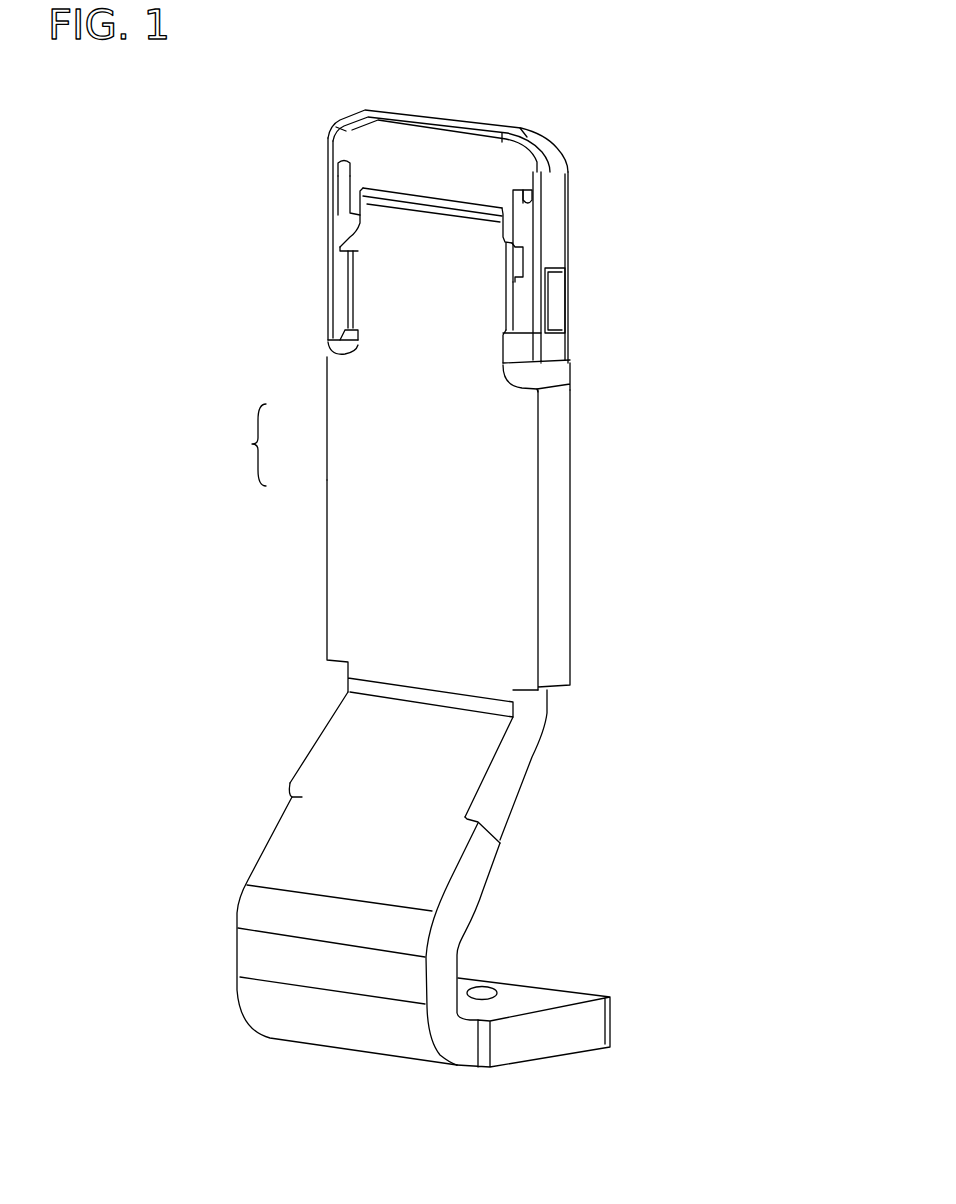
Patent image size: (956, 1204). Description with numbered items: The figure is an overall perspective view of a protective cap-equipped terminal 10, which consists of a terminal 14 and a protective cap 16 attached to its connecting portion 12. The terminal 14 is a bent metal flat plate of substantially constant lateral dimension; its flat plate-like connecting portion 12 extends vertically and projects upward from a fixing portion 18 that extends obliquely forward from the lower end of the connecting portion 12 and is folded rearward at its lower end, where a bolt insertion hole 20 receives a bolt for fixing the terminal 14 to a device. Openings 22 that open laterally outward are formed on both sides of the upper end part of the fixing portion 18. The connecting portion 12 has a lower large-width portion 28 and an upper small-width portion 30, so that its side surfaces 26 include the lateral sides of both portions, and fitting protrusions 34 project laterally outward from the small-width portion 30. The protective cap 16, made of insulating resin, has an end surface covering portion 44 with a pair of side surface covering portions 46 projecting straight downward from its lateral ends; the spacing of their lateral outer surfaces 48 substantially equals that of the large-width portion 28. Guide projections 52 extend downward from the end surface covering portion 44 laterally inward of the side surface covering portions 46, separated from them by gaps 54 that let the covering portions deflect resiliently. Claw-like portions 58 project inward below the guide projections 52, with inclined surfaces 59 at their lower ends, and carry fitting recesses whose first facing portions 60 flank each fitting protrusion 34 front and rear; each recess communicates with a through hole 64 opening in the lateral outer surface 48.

The protective cap-equipped terminal 10 is at (637, 113).
The connecting portion 12 is at (386, 502).
The terminal 14 is at (573, 281).
The protective cap 16 is at (562, 128).
The fixing portion 18 is at (290, 965).
The bolt insertion hole 20 is at (469, 1000).
The openings 22 is at (288, 777).
The side surfaces 26 is at (563, 563).
The large-width portion 28 is at (425, 555).
The small-width portion 30 is at (427, 287).
The fitting protrusions 34 is at (352, 237).
The end surface covering portion 44 is at (427, 178).
The side surface covering portions 46 is at (326, 182).
The lateral outer surfaces 48 is at (552, 211).
The guide projections 52 is at (358, 203).
The gaps 54 is at (340, 168).
The claw-like portions 58 is at (342, 288).
The inclined surfaces 59 is at (355, 345).
The first facing portions 60 is at (345, 300).
The through hole 64 is at (557, 272).